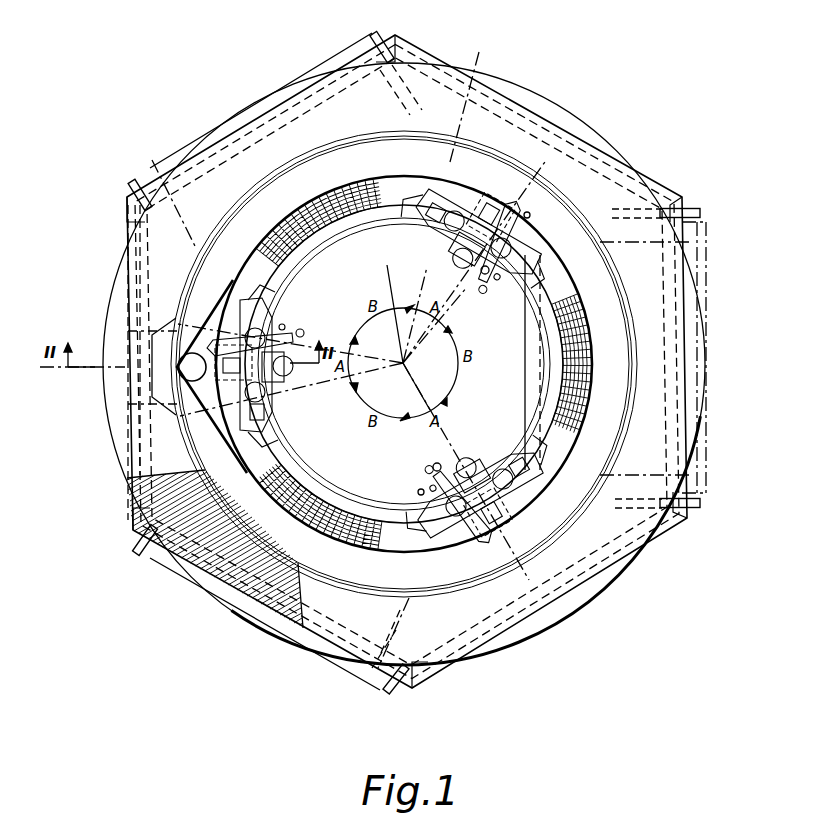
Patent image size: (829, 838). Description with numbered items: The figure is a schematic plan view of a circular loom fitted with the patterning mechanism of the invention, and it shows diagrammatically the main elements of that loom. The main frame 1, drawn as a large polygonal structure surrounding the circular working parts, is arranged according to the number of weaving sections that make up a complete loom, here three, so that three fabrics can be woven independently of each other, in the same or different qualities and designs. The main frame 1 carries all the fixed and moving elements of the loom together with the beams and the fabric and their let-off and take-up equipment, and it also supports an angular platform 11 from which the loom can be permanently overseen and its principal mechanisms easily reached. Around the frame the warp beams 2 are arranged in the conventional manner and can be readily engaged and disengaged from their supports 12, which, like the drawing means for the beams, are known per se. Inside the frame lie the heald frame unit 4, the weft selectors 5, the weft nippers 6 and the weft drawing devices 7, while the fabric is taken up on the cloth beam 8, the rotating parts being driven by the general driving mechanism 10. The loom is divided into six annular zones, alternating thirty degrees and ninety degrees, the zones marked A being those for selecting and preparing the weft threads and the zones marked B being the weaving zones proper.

The main frame 1 is at (652, 166).
The warp beams 2 is at (180, 215).
The heald frame unit 4 is at (330, 200).
The weft selectors 5 is at (480, 272).
The weft nippers 6 is at (528, 216).
The weft drawing devices 7 is at (340, 232).
The cloth beam 8 is at (328, 262).
The general driving mechanism 10 is at (199, 377).
The angular platform 11 is at (210, 590).
The support 12 is at (386, 36).